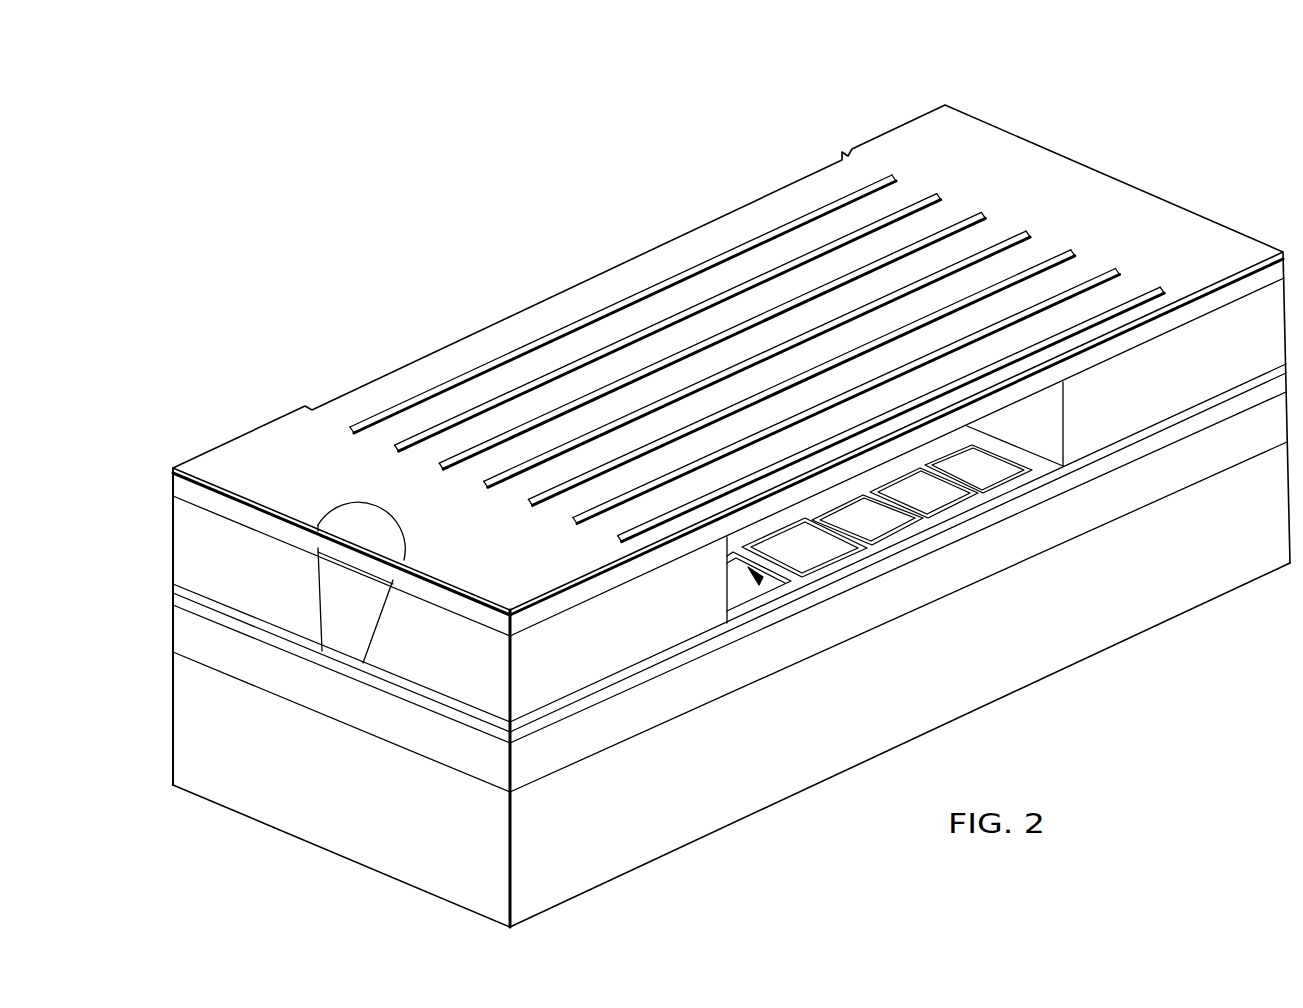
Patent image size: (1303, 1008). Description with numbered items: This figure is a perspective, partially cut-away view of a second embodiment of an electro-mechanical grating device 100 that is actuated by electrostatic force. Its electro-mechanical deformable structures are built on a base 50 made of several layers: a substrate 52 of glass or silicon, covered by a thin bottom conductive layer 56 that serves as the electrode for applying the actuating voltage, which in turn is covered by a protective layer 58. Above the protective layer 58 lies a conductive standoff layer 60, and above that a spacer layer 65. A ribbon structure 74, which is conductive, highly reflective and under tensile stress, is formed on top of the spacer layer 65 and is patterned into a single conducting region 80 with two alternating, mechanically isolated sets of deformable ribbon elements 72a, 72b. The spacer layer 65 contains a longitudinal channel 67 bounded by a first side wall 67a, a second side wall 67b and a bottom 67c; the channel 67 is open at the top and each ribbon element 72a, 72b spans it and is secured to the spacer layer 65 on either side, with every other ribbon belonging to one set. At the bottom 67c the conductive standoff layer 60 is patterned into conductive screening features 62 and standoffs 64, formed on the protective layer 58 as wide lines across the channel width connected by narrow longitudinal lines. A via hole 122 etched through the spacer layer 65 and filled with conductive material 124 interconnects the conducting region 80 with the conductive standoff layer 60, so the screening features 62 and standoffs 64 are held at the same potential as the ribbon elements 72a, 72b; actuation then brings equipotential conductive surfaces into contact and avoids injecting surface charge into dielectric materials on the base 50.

The electro-mechanical grating device 100 is at (735, 143).
The conducting region 80 is at (270, 465).
The ribbon structure 74 is at (182, 486).
The spacer layer 65 is at (183, 558).
The conductive standoff layer 60 is at (183, 589).
The protective layer 58 is at (627, 688).
The bottom conductive layer 56 is at (762, 668).
The substrate 52 is at (742, 778).
The base 50 is at (361, 815).
The first set of deformable ribbon elements 72a is at (690, 330).
The second set of deformable ribbon elements 72b is at (578, 422).
The via hole 122 is at (320, 592).
The conductive material 124 is at (345, 625).
The longitudinal channel 67 is at (757, 576).
The first side wall 67a is at (733, 590).
The second side wall 67b is at (1046, 416).
The bottom 67c is at (927, 500).
The standoffs 64 is at (963, 487).
The screening features 62 is at (963, 447).